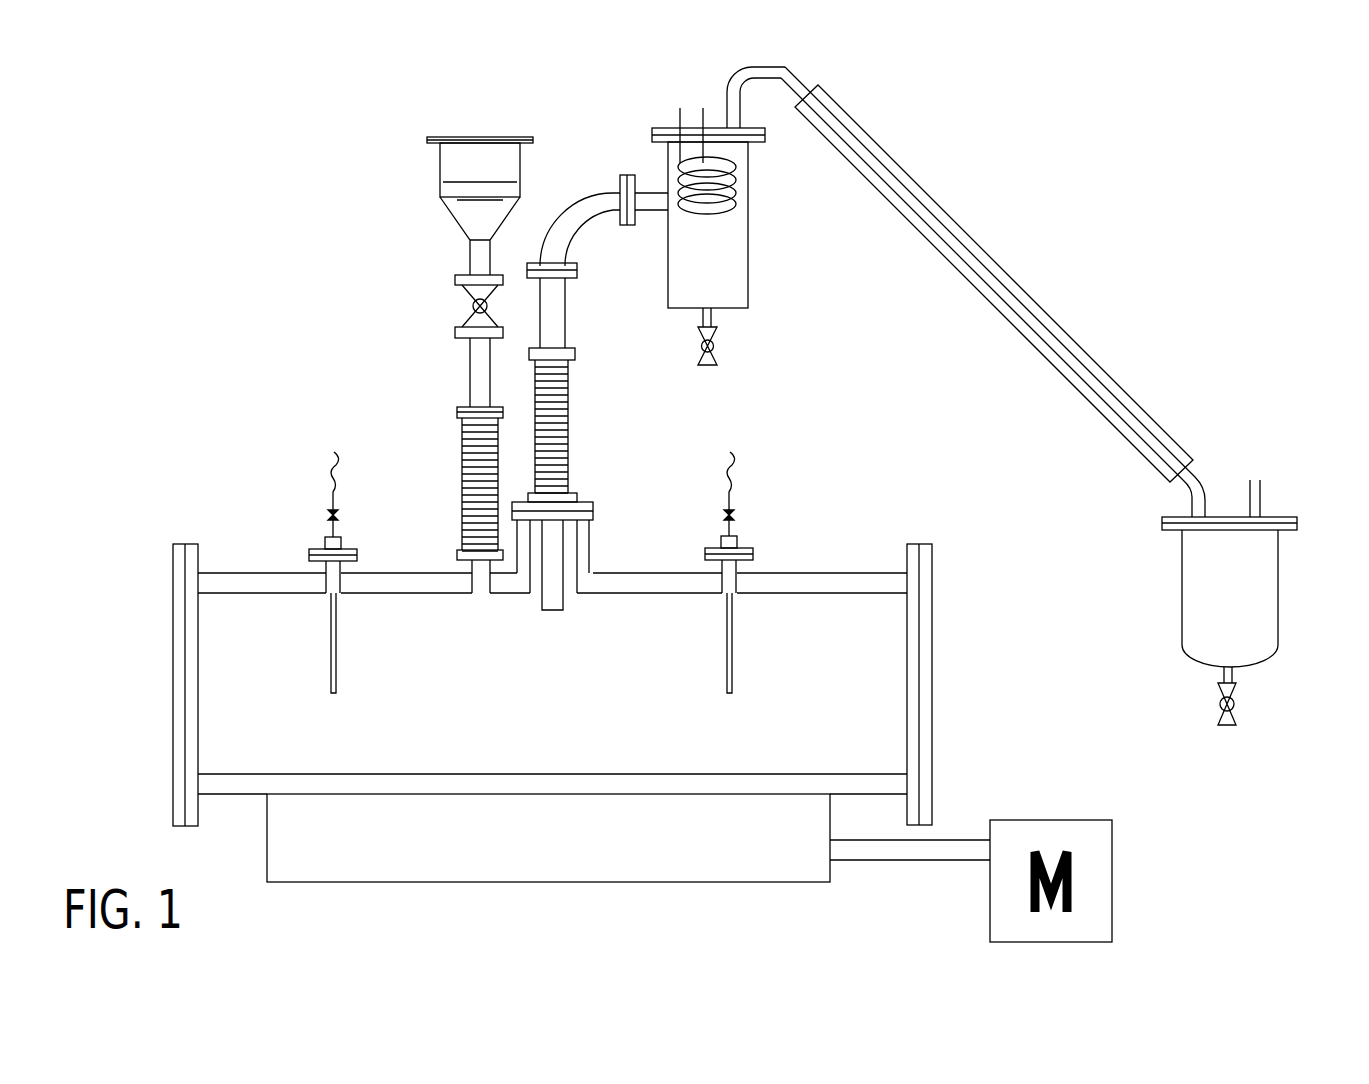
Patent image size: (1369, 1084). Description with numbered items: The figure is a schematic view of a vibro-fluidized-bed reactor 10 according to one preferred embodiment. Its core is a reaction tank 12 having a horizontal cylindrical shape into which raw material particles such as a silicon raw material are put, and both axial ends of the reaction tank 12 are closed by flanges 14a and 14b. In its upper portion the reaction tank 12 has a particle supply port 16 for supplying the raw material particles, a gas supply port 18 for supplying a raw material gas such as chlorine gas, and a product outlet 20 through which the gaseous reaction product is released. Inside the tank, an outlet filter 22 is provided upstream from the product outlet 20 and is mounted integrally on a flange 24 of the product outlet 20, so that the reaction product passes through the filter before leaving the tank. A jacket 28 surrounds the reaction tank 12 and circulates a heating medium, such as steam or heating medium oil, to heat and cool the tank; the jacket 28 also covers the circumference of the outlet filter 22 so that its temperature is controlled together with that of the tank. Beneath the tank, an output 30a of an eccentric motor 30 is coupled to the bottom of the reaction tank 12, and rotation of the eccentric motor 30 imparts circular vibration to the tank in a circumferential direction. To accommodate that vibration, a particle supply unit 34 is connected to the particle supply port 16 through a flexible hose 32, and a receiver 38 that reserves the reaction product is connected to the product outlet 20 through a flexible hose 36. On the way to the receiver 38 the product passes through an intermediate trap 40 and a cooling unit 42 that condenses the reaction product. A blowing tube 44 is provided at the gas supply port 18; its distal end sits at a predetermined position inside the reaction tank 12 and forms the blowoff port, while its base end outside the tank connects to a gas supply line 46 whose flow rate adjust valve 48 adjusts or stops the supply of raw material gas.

The vibro-fluidized-bed reactor 10 is at (1308, 929).
The reaction tank 12 is at (260, 770).
The flange 14a is at (173, 638).
The flange 14b is at (932, 652).
The particle supply port 16 is at (457, 552).
The gas supply port 18 is at (352, 549).
The product outlet 20 is at (595, 513).
The outlet filter 22 is at (565, 547).
The flange 24 is at (512, 501).
The jacket 28 is at (860, 793).
The eccentric motor 30 is at (1112, 885).
The output 30a is at (490, 882).
The flexible hose 32 is at (455, 428).
The particle supply unit 34 is at (452, 218).
The flexible hose 36 is at (572, 373).
The receiver 38 is at (1278, 597).
The intermediate trap 40 is at (748, 225).
The cooling unit 42 is at (996, 262).
The blowing tube 44 is at (331, 688).
The gas supply line 46 is at (333, 490).
The flow rate adjust valve 48 is at (345, 510).